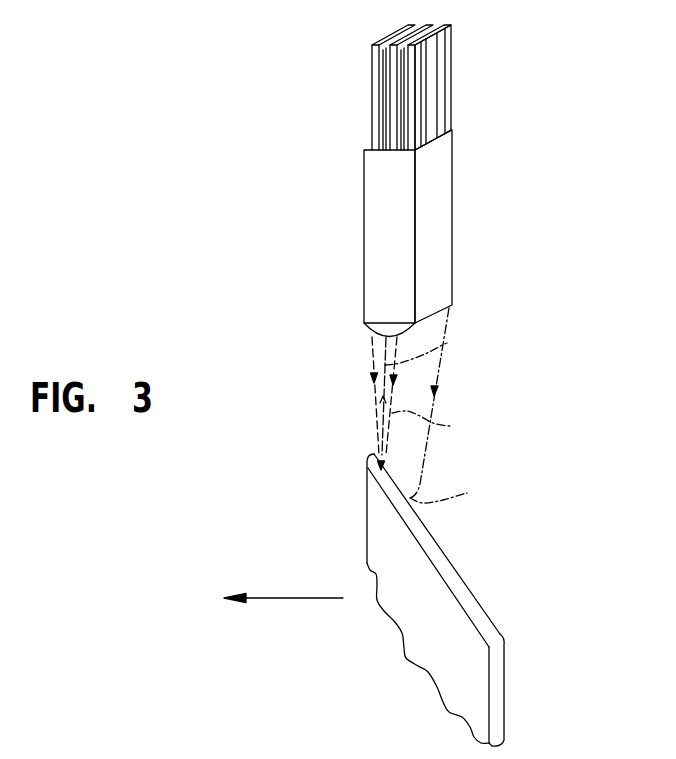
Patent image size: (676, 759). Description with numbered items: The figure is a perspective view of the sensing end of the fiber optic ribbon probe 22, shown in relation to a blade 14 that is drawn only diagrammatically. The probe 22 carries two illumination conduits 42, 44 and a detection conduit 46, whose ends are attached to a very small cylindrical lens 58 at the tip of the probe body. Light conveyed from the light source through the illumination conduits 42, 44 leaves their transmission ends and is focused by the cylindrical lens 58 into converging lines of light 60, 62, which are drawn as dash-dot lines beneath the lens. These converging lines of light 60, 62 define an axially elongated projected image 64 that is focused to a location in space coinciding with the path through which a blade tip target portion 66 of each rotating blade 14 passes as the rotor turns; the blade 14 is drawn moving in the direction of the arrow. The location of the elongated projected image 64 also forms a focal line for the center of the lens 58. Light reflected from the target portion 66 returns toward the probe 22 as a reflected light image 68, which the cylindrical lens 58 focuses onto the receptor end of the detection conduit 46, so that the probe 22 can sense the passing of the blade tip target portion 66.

The blade 14 is at (497, 677).
The probe 22 is at (355, 230).
The illumination conduit 42 is at (456, 73).
The illumination conduit 44 is at (364, 100).
The detection conduit 46 is at (385, 65).
The cylindrical lens 58 is at (360, 333).
The converging line of light 60 is at (450, 426).
The converging line of light 62 is at (375, 391).
The elongated projected image 64 is at (467, 493).
The blade tip target portion 66 is at (458, 583).
The reflected light image 68 is at (447, 343).